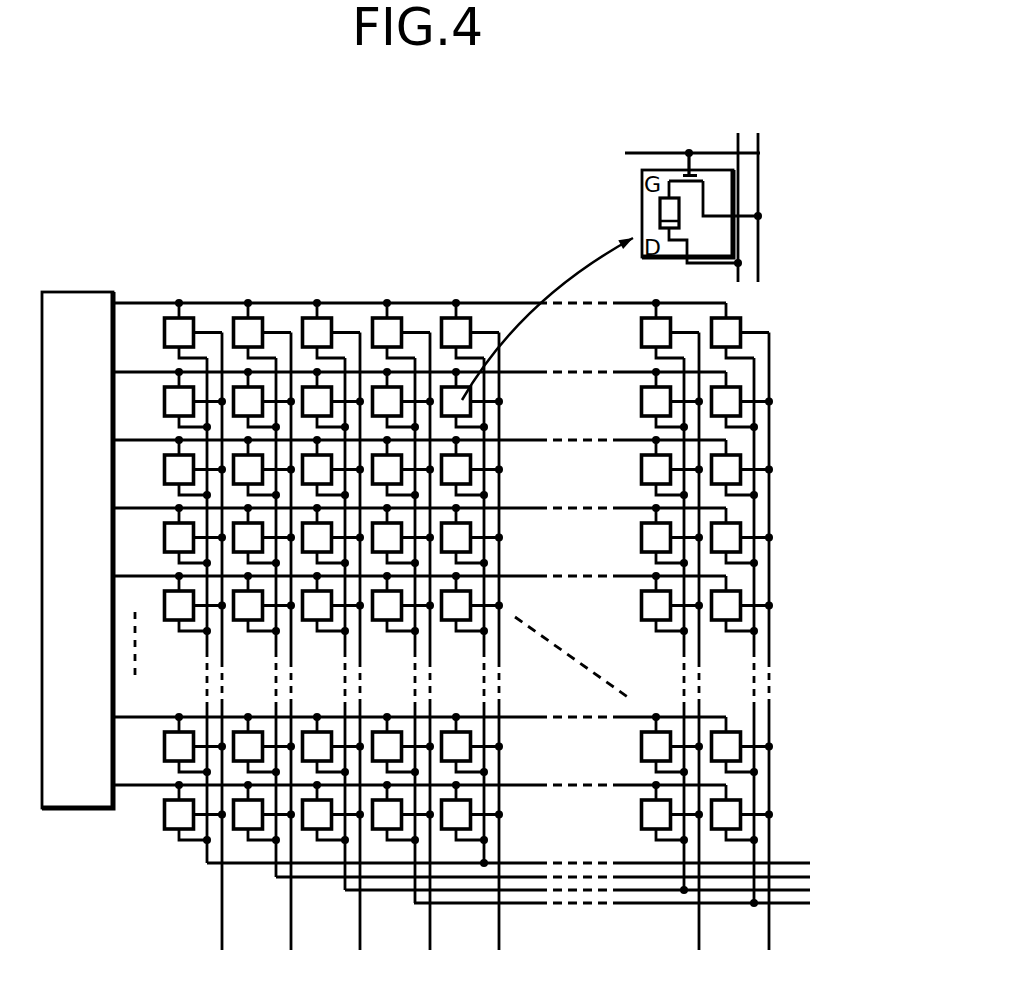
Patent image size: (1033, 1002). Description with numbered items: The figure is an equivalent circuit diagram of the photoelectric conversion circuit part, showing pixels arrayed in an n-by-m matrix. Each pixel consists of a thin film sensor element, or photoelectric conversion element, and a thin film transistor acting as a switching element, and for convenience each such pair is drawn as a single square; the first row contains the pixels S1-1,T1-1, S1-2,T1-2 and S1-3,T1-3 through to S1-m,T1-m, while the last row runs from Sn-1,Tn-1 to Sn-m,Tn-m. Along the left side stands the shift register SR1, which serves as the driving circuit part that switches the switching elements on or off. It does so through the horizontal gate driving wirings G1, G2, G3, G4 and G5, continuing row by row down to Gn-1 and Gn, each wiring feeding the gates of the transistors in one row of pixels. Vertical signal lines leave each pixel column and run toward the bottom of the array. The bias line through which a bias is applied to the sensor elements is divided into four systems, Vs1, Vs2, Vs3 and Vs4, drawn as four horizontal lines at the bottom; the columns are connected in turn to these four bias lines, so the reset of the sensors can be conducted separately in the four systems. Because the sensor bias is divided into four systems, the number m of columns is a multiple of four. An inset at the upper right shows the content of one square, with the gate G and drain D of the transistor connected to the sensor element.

The shift register SR1 is at (77, 550).
The gate driving wiring G1 is at (419, 287).
The gate driving wiring G2 is at (419, 356).
The gate driving wiring G3 is at (419, 424).
The gate driving wiring G4 is at (419, 492).
The gate driving wiring G5 is at (419, 560).
The gate driving wiring Gn-1 is at (419, 702).
The gate driving wiring Gn is at (419, 770).
The bias line Vs1 is at (810, 863).
The bias line Vs2 is at (810, 877).
The bias line Vs3 is at (810, 890).
The bias line Vs4 is at (810, 903).
The thin film sensor element and thin film transistor S1-1,T1-1 is at (266, 173).
The thin film sensor element and thin film transistor S1-2,T1-2 is at (357, 213).
The thin film sensor element and thin film transistor S1-3,T1-3 is at (436, 252).
The thin film sensor element and thin film transistor S1-m,T1-m is at (726, 318).
The thin film sensor element and thin film transistor Sn-1,Tn-1 is at (200, 875).
The thin film sensor element and thin film transistor Sn-m,Tn-m is at (717, 820).